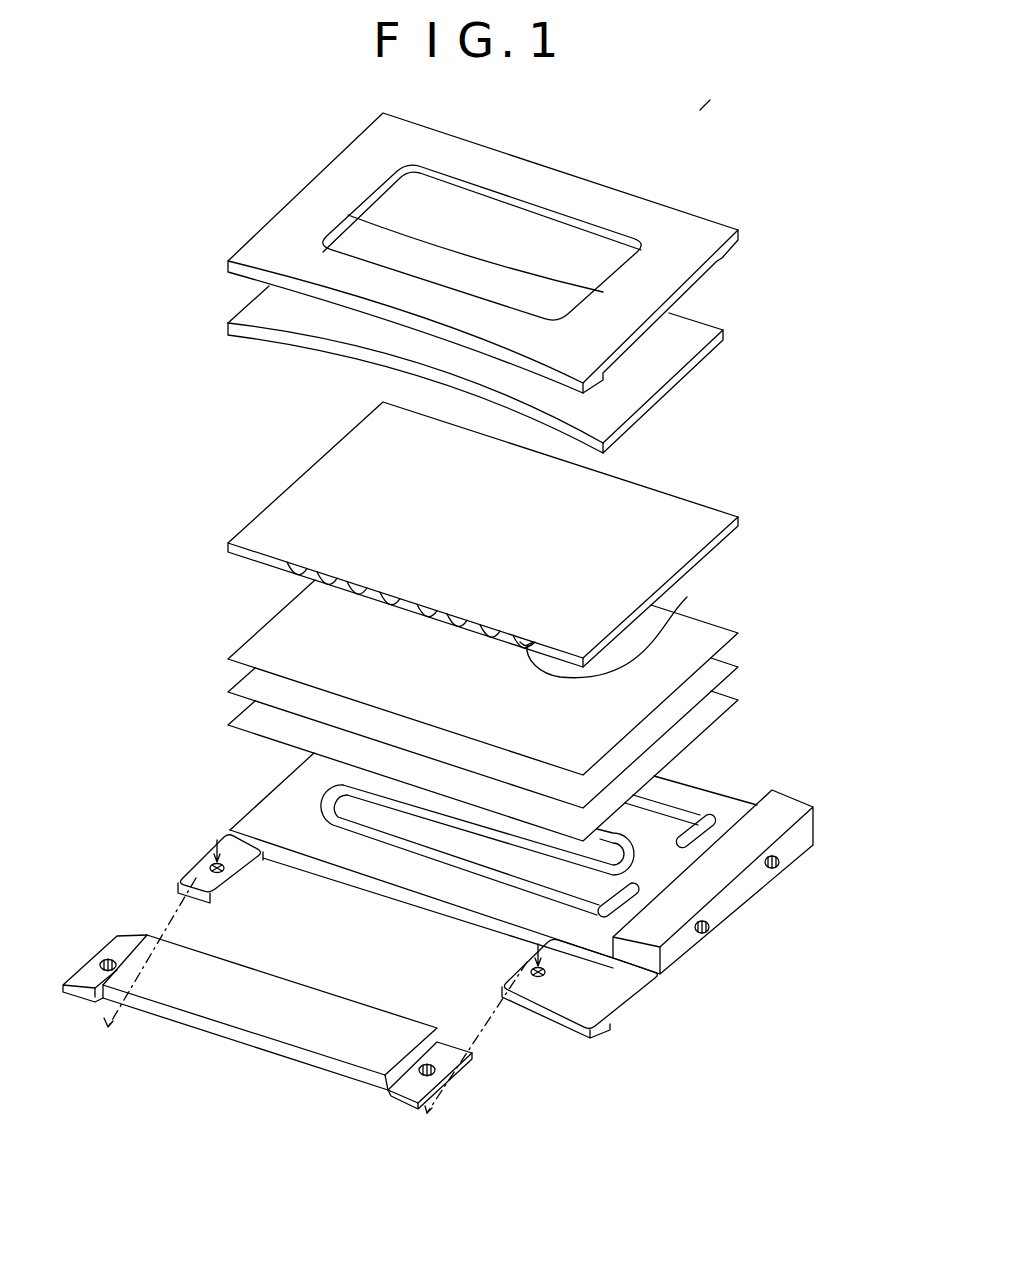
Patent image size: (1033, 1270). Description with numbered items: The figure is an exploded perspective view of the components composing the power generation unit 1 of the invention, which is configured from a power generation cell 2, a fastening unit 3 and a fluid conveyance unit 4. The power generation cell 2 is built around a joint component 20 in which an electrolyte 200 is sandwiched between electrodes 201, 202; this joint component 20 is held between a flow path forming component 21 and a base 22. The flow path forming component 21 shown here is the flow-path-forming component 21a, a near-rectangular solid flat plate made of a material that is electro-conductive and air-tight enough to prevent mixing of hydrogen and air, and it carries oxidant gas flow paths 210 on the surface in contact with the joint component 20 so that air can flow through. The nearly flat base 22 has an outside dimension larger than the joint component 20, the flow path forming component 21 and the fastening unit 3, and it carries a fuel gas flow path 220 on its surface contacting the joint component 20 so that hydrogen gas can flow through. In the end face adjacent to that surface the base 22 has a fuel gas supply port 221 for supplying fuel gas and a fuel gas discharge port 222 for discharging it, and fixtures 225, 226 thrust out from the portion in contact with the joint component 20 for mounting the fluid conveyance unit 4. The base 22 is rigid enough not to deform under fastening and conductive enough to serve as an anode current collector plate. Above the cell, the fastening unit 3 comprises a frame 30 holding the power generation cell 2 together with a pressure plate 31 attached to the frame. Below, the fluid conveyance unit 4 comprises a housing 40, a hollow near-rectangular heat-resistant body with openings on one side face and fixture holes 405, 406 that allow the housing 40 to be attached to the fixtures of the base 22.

The power generation unit 1 is at (706, 104).
The power generation cell 2 is at (863, 508).
The fastening unit 3 is at (787, 221).
The frame 30 is at (680, 242).
The lower cover plate 31 is at (680, 347).
The joint component 20 is at (811, 593).
The flow path forming component 21 is at (539, 534).
The flow-path-forming component 21a is at (740, 523).
The oxidant gas flow paths 210 is at (687, 597).
The electrode 202 is at (707, 633).
The electrolyte 200 is at (716, 679).
The electrode 201 is at (718, 710).
The base 22 is at (790, 805).
The fuel gas flow path 220 is at (667, 807).
The fuel gas supply port 221 is at (780, 860).
The fuel gas discharge port 222 is at (708, 925).
The fixture 225 is at (602, 1000).
The fixture 226 is at (192, 880).
The fluid conveyance unit 4 is at (345, 1095).
The housing 40 is at (270, 983).
The fixture hole 405 is at (440, 1073).
The fixture hole 406 is at (77, 978).